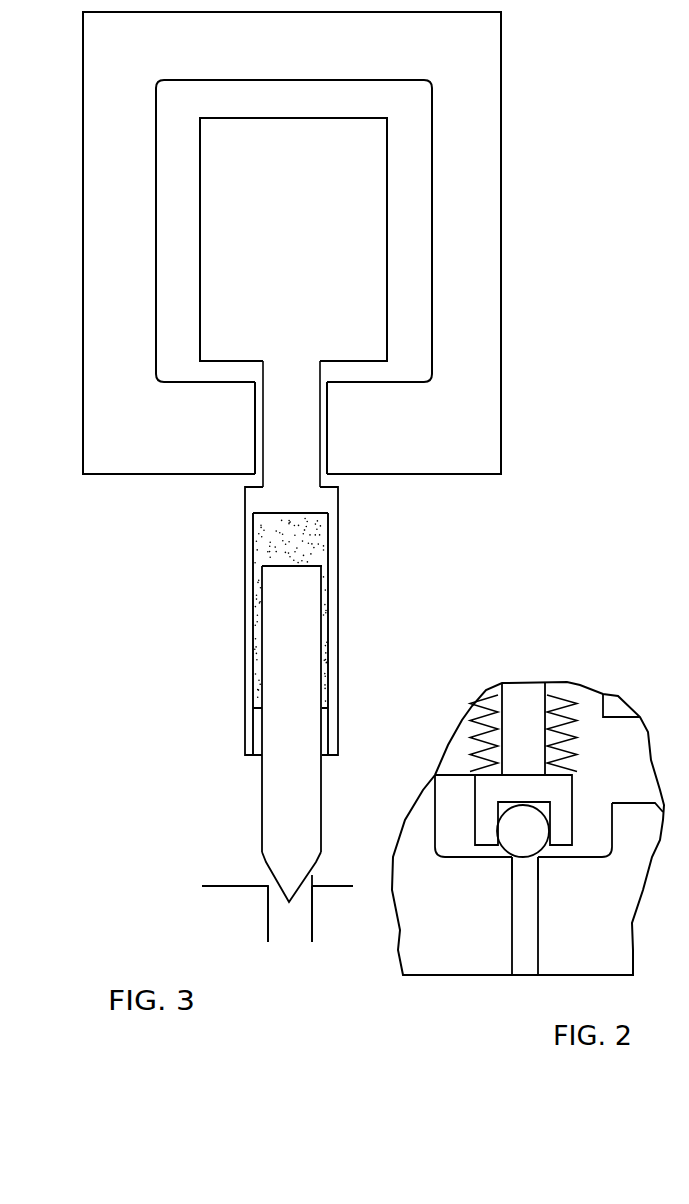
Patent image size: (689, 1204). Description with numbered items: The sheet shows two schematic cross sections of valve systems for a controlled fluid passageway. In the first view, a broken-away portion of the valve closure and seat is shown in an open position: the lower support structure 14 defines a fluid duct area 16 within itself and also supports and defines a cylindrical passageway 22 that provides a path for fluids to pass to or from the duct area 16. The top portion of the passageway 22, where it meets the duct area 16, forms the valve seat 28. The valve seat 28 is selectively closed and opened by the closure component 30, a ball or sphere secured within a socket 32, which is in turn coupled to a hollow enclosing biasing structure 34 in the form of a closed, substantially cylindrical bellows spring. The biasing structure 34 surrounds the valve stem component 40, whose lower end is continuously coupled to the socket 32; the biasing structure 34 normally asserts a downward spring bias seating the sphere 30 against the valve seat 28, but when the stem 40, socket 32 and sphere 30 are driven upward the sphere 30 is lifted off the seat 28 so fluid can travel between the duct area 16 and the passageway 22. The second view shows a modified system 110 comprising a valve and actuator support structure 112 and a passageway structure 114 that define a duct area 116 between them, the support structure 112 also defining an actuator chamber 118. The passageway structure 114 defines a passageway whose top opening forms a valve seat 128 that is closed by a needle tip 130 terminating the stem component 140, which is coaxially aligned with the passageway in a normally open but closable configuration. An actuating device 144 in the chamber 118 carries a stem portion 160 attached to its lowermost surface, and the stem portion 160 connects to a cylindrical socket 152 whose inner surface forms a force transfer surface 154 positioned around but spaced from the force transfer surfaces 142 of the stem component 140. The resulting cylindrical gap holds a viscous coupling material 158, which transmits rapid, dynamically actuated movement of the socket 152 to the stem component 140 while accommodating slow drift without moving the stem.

In FIG. 2, the lower support structure 14 is at (460, 952).
In FIG. 2, the fluid duct area 16 is at (645, 793).
In FIG. 3, the cylindrical passageway 22 is at (312, 930).
In FIG. 2, the cylindrical passageway 22 is at (538, 945).
In FIG. 2, the valve seat 28 is at (527, 862).
In FIG. 2, the closure component 30 is at (535, 827).
In FIG. 2, the socket 32 is at (563, 787).
In FIG. 2, the biasing structure 34 is at (578, 742).
In FIG. 2, the valve stem component 40 is at (530, 700).
In FIG. 3, the system 110 is at (90, 865).
In FIG. 3, the valve and actuator support structure 112 is at (476, 403).
In FIG. 3, the passageway structure 114 is at (218, 944).
In FIG. 3, the duct area 116 is at (155, 813).
In FIG. 3, the actuator chamber 118 is at (421, 231).
In FIG. 3, the valve seat 128 is at (312, 878).
In FIG. 3, the needle tip 130 is at (262, 862).
In FIG. 3, the stem component 140 is at (295, 640).
In FIG. 3, the force transfer surface 142 is at (258, 608).
In FIG. 3, the actuating device 144 is at (303, 243).
In FIG. 3, the cylindrical socket 152 is at (326, 580).
In FIG. 3, the force transfer surface portion 154 is at (323, 548).
In FIG. 3, the viscous coupling material 158 is at (300, 545).
In FIG. 3, the stem portion 160 is at (280, 382).